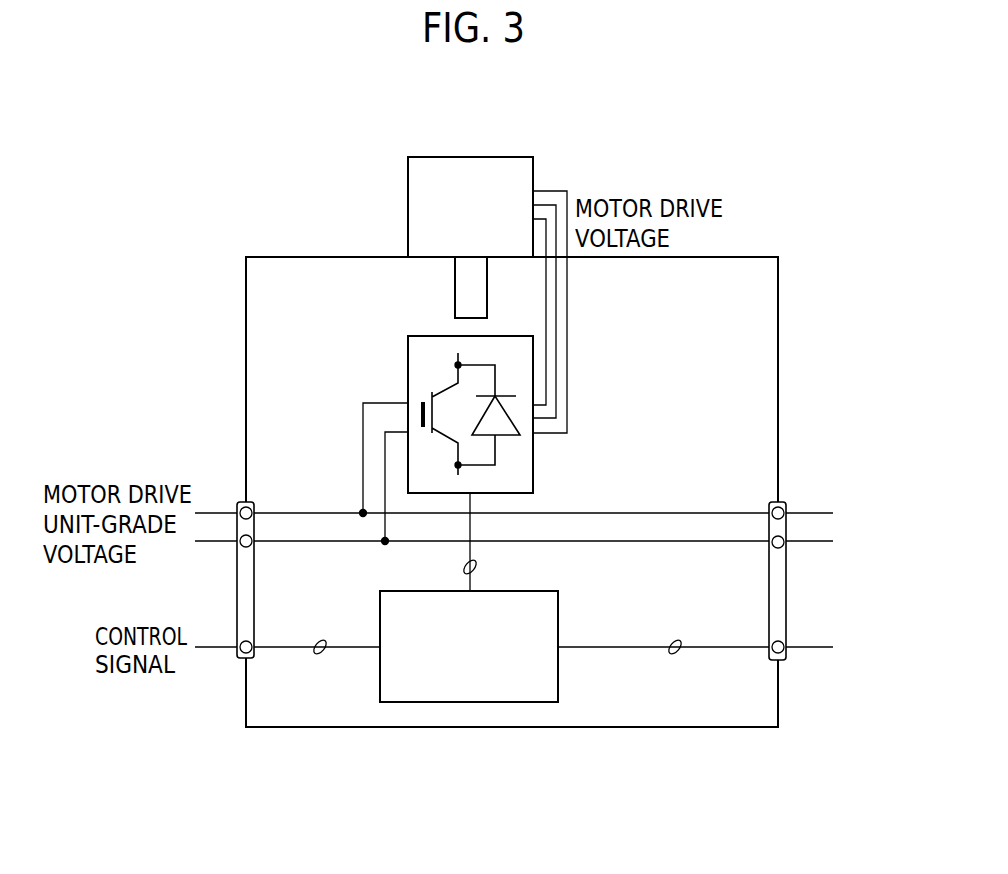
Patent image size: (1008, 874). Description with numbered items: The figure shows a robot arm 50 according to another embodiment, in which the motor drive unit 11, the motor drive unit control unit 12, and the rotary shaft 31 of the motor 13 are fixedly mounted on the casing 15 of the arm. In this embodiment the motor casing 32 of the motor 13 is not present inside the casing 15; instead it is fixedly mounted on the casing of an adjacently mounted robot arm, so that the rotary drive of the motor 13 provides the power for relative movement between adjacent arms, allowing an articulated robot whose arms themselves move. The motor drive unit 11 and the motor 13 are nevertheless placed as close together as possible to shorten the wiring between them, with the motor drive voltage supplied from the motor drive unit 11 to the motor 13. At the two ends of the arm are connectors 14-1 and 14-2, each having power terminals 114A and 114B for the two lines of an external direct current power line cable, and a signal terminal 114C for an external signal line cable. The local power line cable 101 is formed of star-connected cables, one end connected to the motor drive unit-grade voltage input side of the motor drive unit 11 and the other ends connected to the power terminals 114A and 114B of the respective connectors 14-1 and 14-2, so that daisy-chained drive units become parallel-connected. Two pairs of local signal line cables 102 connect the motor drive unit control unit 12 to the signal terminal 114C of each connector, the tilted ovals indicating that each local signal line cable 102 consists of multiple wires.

The robot arm 50 is at (757, 258).
The casing 15 is at (258, 257).
The motor 13 is at (510, 157).
The motor casing 32 is at (408, 188).
The rotary shaft 31 is at (454, 290).
The motor drive unit 11 is at (415, 336).
The local power line cable 101 is at (368, 383).
The local signal line cable 102 is at (352, 648).
The motor drive unit control unit 12 is at (470, 702).
The connector 14-1 is at (237, 655).
The connector 14-2 is at (786, 660).
The power terminal 114A is at (238, 505).
The power terminal 114B is at (243, 547).
The signal terminal 114C is at (249, 658).